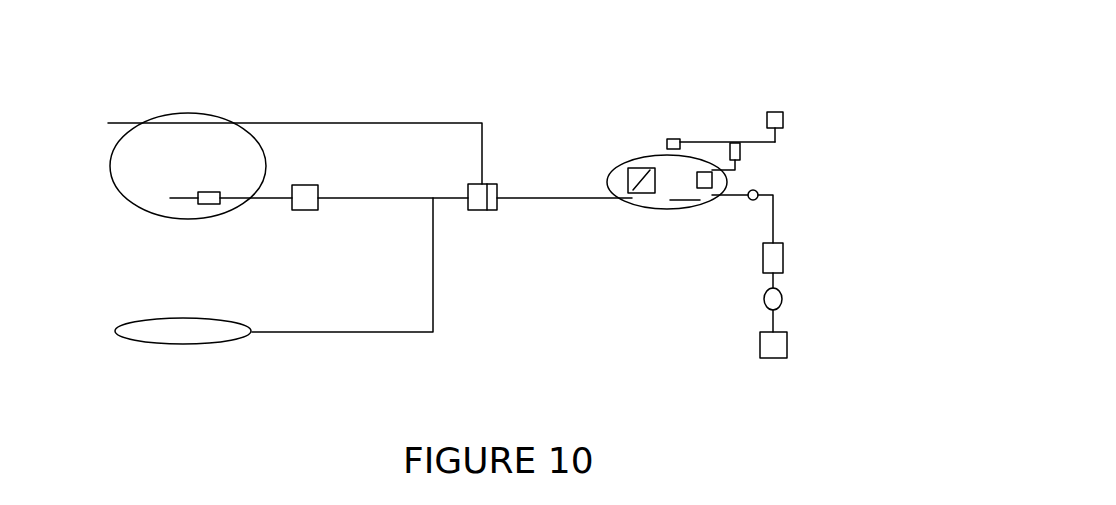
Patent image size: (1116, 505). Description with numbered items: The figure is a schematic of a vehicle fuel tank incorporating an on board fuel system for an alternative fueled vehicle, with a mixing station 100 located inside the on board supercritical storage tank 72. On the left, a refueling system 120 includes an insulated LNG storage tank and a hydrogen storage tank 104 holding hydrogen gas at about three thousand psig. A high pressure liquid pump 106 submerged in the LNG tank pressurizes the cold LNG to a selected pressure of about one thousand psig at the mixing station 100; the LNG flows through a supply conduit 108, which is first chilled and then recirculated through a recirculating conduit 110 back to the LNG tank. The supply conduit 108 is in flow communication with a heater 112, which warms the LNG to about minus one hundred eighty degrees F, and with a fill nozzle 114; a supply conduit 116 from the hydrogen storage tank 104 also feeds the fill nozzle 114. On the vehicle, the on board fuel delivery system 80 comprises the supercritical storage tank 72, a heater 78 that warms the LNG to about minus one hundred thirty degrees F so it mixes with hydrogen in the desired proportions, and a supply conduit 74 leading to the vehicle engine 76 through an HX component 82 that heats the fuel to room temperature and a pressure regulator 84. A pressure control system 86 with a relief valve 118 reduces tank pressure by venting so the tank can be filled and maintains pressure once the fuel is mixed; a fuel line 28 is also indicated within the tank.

The fuel line 28 is at (655, 183).
The supercritical storage tank 72 is at (632, 208).
The supply conduit 74 is at (775, 227).
The vehicle engine 76 is at (760, 345).
The heater 78 is at (697, 172).
The on board fuel delivery system 80 is at (840, 100).
The HX component 82 is at (763, 260).
The pressure regulator 84 is at (765, 298).
The pressure control system 86 is at (742, 139).
The mixing station 100 is at (620, 176).
The hydrogen storage tank 104 is at (220, 344).
The high pressure liquid pump 106 is at (220, 205).
The supply conduit 108 is at (277, 197).
The recirculating conduit 110 is at (450, 122).
The heater 112 is at (312, 185).
The fill nozzle 114 is at (500, 183).
The supply conduit 116 is at (433, 317).
The relief valve 118 is at (783, 120).
The refueling system 120 is at (122, 95).